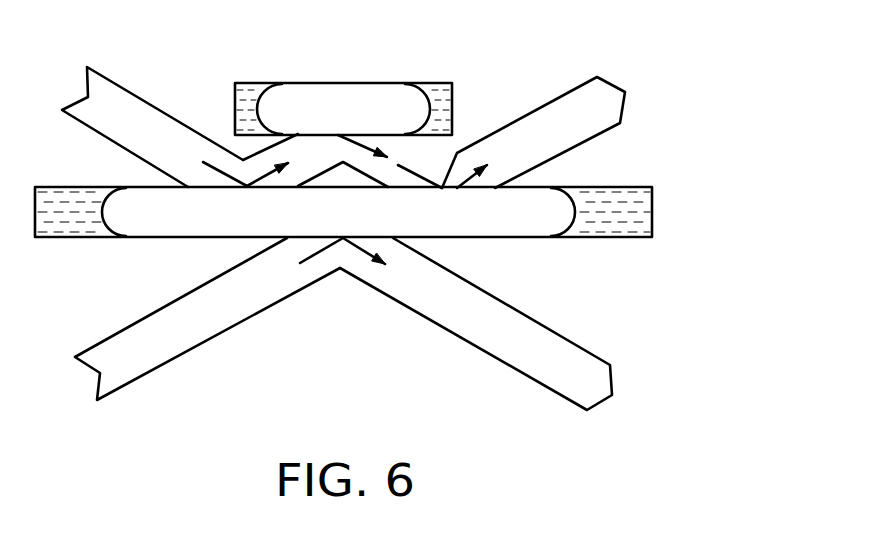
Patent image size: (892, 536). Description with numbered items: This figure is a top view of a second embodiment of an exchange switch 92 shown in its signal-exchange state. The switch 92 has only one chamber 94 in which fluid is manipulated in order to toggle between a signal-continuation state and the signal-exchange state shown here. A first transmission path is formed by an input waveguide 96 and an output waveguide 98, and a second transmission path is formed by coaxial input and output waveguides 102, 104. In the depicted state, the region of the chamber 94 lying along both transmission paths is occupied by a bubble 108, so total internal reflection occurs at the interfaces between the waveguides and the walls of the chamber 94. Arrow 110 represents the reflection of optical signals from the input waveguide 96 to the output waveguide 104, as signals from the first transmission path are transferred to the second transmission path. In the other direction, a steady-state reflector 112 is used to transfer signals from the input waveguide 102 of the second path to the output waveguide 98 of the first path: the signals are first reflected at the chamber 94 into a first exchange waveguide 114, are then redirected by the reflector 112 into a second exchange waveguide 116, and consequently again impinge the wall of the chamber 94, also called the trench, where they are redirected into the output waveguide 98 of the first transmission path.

The exchange switch 92 is at (683, 62).
The chamber 94 is at (627, 243).
The input waveguide 96 is at (157, 357).
The output waveguide 98 is at (557, 122).
The input waveguide 102 is at (132, 118).
The output waveguide 104 is at (517, 362).
The bubble 108 is at (145, 230).
The arrow 110 is at (357, 250).
The steady-state reflector 112 is at (423, 88).
The first exchange waveguide 114 is at (288, 152).
The second exchange waveguide 116 is at (393, 153).